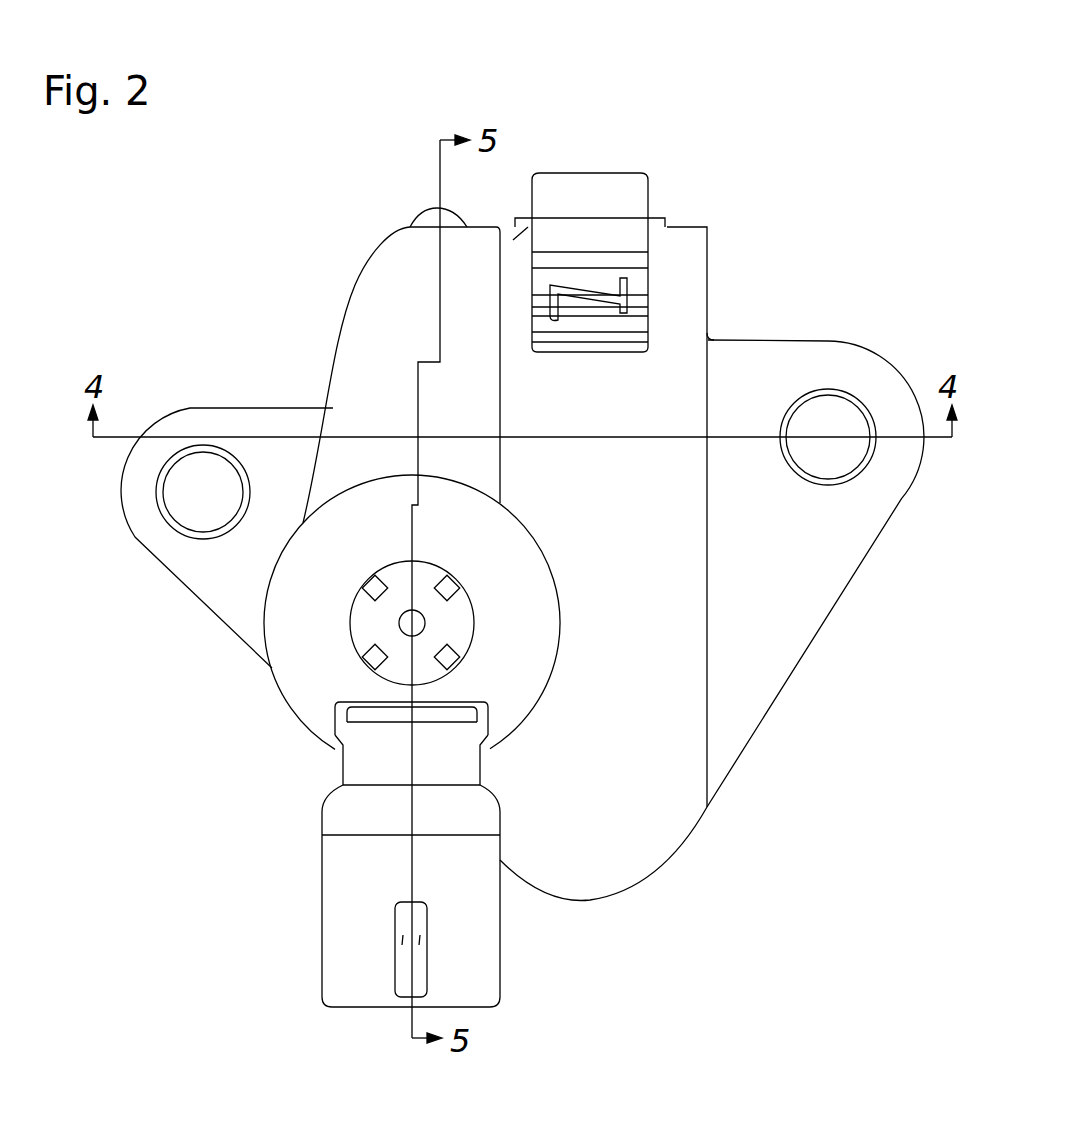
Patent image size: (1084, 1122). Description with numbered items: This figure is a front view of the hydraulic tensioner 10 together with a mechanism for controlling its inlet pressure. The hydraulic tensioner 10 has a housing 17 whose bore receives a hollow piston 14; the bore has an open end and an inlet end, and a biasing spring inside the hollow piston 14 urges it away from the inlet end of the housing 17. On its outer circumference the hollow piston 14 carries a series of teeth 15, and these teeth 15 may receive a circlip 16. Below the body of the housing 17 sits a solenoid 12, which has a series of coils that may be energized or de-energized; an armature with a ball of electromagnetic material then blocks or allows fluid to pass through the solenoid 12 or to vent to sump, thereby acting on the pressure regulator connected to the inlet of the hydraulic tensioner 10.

The hydraulic tensioner 10 is at (583, 153).
The solenoid 12 is at (322, 850).
The hollow piston 14 is at (648, 203).
The teeth 15 is at (560, 253).
The circlip 16 is at (625, 292).
The housing 17 is at (820, 343).